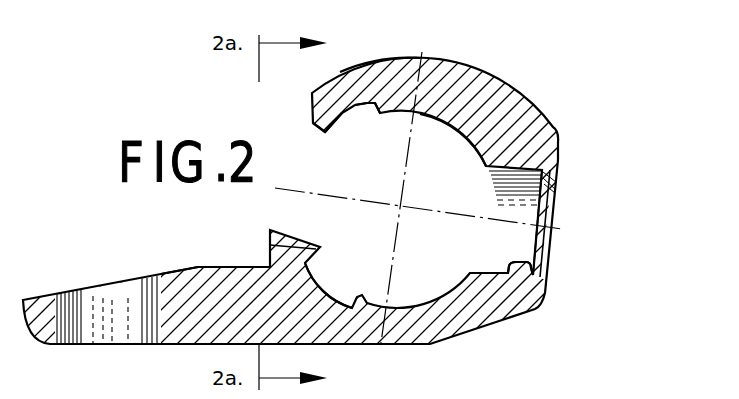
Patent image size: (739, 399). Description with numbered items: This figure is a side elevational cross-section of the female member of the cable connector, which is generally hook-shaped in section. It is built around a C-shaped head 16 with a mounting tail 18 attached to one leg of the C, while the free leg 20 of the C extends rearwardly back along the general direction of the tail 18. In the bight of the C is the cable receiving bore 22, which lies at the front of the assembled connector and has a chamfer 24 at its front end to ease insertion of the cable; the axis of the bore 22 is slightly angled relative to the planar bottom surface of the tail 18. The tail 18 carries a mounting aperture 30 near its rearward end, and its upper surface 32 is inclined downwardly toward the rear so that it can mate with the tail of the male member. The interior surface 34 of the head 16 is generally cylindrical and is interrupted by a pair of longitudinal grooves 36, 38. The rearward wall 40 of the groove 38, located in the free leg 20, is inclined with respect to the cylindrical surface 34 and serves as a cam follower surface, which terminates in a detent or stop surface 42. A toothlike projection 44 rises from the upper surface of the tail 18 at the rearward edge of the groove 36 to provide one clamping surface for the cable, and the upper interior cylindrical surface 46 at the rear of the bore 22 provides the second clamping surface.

The C-shaped head 16 is at (510, 80).
The mounting tail 18 is at (178, 346).
The free leg 20 is at (371, 61).
The cable receiving bore 22 is at (538, 272).
The chamfer 24 is at (553, 192).
The mounting aperture 30 is at (152, 310).
The upper surface of the tail portion 32 is at (170, 268).
The interior surface 34 is at (473, 145).
The longitudinal groove 36 is at (330, 288).
The longitudinal groove 38 is at (368, 106).
The rearward wall 40 is at (340, 122).
The detent or stop surface 42 is at (320, 130).
The toothlike projection 44 is at (282, 232).
The upper interior cylindrical surface 46 is at (488, 170).